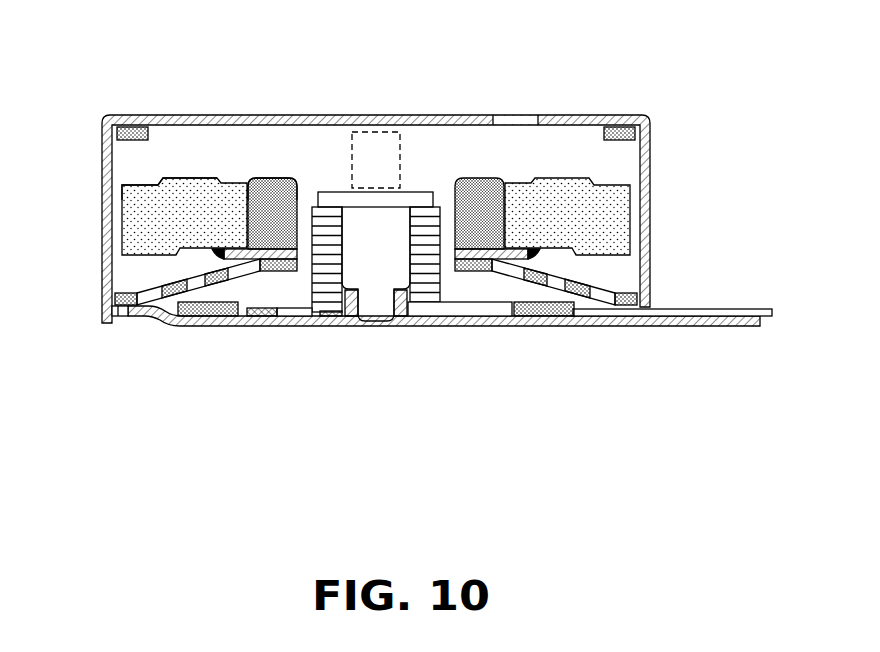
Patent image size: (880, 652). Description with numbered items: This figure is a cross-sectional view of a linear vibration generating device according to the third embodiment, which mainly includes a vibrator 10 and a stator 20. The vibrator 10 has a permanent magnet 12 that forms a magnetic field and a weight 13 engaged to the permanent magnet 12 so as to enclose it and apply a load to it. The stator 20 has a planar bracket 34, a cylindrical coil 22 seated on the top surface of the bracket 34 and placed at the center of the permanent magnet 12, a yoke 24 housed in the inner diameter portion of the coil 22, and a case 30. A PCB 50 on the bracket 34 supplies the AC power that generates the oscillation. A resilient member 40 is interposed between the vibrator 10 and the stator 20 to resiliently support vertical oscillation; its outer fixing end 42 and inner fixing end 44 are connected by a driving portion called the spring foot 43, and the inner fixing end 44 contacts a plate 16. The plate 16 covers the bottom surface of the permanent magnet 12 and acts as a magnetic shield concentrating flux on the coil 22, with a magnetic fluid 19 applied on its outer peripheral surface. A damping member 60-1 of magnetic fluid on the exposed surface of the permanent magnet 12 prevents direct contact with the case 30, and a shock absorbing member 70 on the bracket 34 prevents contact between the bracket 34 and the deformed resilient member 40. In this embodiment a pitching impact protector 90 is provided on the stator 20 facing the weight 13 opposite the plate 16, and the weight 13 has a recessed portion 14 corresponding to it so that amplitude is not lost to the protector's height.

The vibrator 10 is at (148, 66).
The permanent magnet 12 is at (252, 185).
The weight 13 is at (172, 197).
The recessed portion 14 is at (122, 176).
The plate 16 is at (223, 257).
The magnetic fluid 19 is at (543, 252).
The stator 20 is at (727, 12).
The coil 22 is at (428, 217).
The yoke 24 is at (368, 205).
The case 30 is at (651, 157).
The bracket 34 is at (673, 322).
The resilient member 40 is at (78, 384).
The outer fixing end 42 is at (122, 317).
The spring foot 43 is at (160, 312).
The inner fixing end 44 is at (273, 258).
The PCB 50 is at (463, 310).
The damping member 60-1 is at (271, 178).
The shock absorbing member 70 is at (540, 310).
The pitching impact protector 90 is at (103, 128).